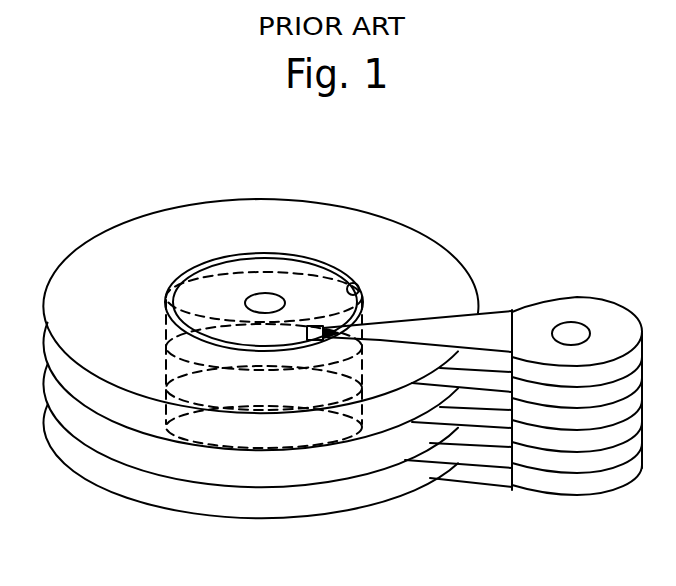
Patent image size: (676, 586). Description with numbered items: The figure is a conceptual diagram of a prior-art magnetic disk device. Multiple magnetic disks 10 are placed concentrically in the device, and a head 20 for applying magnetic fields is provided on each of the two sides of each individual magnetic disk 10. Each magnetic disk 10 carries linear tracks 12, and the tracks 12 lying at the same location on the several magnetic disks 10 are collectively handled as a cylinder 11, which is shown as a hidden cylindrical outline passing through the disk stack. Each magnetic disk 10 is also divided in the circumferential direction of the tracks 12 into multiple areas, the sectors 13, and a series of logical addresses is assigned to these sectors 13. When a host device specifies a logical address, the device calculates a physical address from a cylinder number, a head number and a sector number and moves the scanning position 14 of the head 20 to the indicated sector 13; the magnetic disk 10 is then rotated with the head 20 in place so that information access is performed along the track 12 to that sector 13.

The magnetic disk 10 is at (420, 265).
The cylinder 11 is at (160, 317).
The track 12 is at (205, 261).
The sector 13 is at (357, 284).
The scanning position 14 is at (317, 325).
The head 20 is at (498, 330).